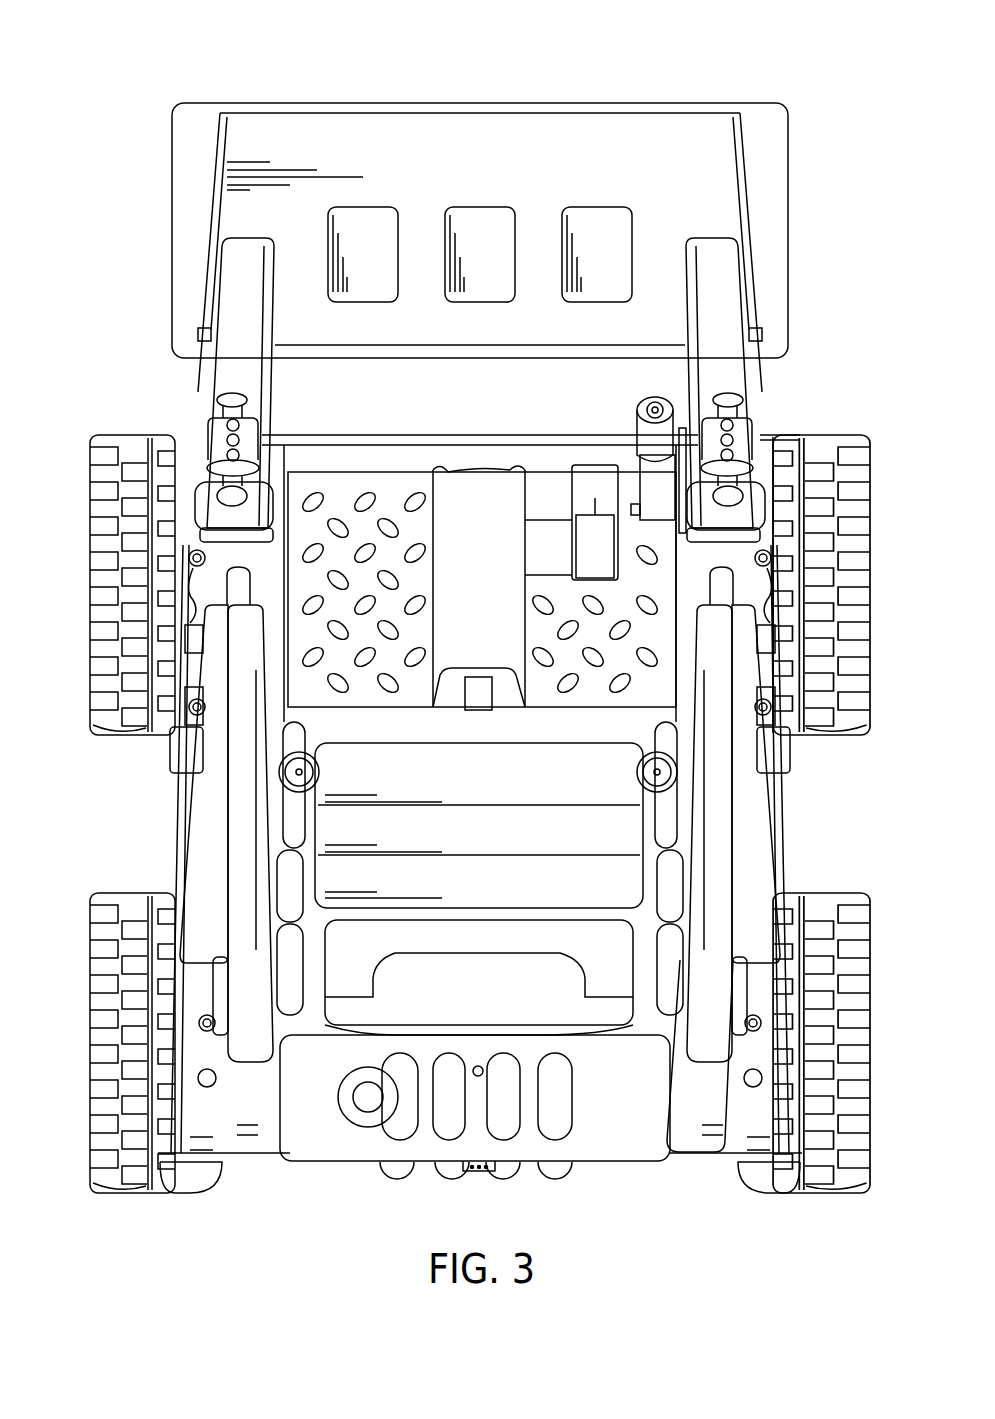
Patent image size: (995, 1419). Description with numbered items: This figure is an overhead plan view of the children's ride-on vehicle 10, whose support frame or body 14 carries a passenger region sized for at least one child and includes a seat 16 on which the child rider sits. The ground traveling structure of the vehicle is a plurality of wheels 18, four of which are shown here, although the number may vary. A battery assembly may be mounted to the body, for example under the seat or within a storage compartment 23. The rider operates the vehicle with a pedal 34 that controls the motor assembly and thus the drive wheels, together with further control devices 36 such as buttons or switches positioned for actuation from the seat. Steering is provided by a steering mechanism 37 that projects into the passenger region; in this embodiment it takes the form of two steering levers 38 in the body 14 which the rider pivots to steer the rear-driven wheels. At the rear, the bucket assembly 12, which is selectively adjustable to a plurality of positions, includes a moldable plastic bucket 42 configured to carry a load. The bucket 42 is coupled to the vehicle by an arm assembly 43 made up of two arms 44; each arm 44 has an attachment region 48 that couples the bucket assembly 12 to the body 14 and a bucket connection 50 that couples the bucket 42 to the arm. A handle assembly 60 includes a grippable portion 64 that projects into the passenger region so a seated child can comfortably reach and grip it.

The children's ride-on vehicle 10 is at (350, 38).
The bucket assembly 12 is at (832, 301).
The support frame or body 14 is at (684, 1118).
The seat 16 is at (583, 857).
The wheels 18 is at (855, 660).
The storage compartment 23 is at (600, 1150).
The pedal 34 is at (605, 553).
The control devices 36 is at (485, 692).
The steering mechanism 37 is at (283, 793).
The steering levers 38 is at (292, 775).
The bucket 42 is at (663, 127).
The arm assembly 43 is at (748, 286).
The arms 44 is at (218, 388).
The attachment region 48 is at (217, 513).
The bucket connection 50 is at (233, 282).
The handle assembly 60 is at (770, 436).
The grippable portion 64 is at (668, 415).